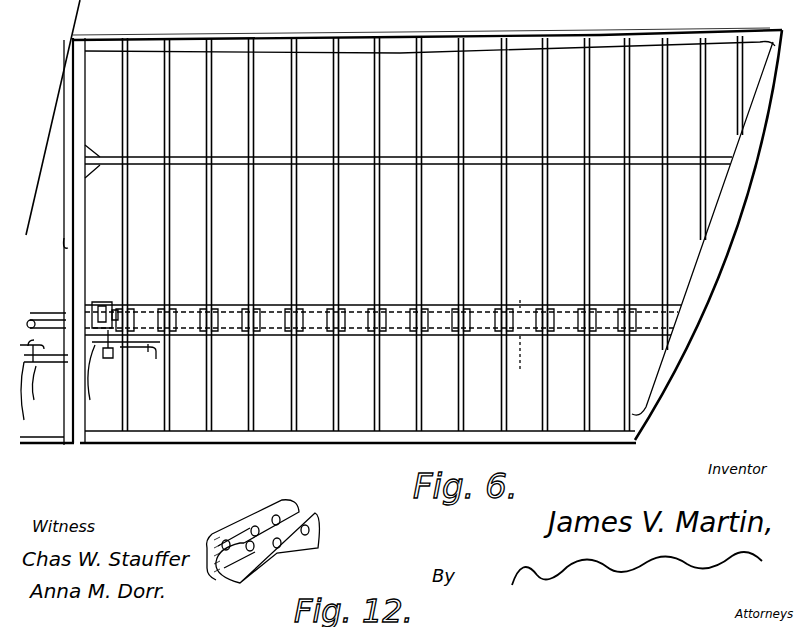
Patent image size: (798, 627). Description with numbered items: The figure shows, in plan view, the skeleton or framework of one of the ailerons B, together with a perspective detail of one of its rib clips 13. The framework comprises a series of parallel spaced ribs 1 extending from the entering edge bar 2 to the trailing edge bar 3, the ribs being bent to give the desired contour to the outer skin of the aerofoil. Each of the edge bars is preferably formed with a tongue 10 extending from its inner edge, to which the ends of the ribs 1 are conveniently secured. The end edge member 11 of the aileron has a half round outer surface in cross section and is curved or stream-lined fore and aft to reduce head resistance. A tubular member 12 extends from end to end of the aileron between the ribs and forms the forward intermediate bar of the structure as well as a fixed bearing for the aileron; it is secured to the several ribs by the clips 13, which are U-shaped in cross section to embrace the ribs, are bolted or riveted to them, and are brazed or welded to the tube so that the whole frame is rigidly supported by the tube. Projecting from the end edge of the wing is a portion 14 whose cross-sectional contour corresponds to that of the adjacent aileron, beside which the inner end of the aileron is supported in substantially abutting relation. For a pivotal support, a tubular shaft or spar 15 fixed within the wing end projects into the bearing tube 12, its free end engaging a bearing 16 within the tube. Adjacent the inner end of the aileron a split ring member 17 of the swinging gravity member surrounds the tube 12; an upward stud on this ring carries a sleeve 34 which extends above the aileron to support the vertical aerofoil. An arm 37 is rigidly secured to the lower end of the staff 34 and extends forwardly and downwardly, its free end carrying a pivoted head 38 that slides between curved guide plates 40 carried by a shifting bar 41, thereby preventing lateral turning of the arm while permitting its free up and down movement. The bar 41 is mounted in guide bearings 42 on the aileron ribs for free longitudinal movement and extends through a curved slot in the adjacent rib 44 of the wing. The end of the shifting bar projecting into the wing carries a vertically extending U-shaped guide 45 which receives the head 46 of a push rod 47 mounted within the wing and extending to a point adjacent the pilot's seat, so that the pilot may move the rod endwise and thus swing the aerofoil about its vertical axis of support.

In FIG. 6, the ribs 1 is at (122, 234).
In FIG. 6, the entering edge bar 2 is at (399, 168).
In FIG. 6, the trailing edge bar 3 is at (357, 32).
In FIG. 6, the tongue 10 is at (236, 52).
In FIG. 6, the end edge member 11 is at (730, 208).
In FIG. 6, the tubular member 12 is at (308, 302).
In FIG. 6, the clips 13 is at (246, 314).
In FIG. 12, the clips 13 is at (243, 520).
In FIG. 6, the projecting portion 14 is at (51, 450).
In FIG. 6, the tubular shaft or spar 15 is at (44, 310).
In FIG. 6, the bearing 16 is at (523, 341).
In FIG. 6, the split ring member 17 is at (104, 300).
In FIG. 6, the sleeve 34 is at (126, 314).
In FIG. 6, the arm 37 is at (160, 343).
In FIG. 6, the head 38 is at (115, 359).
In FIG. 6, the guide plates 40 is at (156, 360).
In FIG. 6, the shifting bar 41 is at (52, 363).
In FIG. 6, the guide bearings 42 is at (100, 382).
In FIG. 6, the rib of the wing 44 is at (64, 246).
In FIG. 6, the U-shaped guide 45 is at (31, 399).
In FIG. 6, the head of push rod 46 is at (45, 394).
In FIG. 6, the push rod 47 is at (44, 343).
In FIG. 6, the aileron B is at (708, 235).